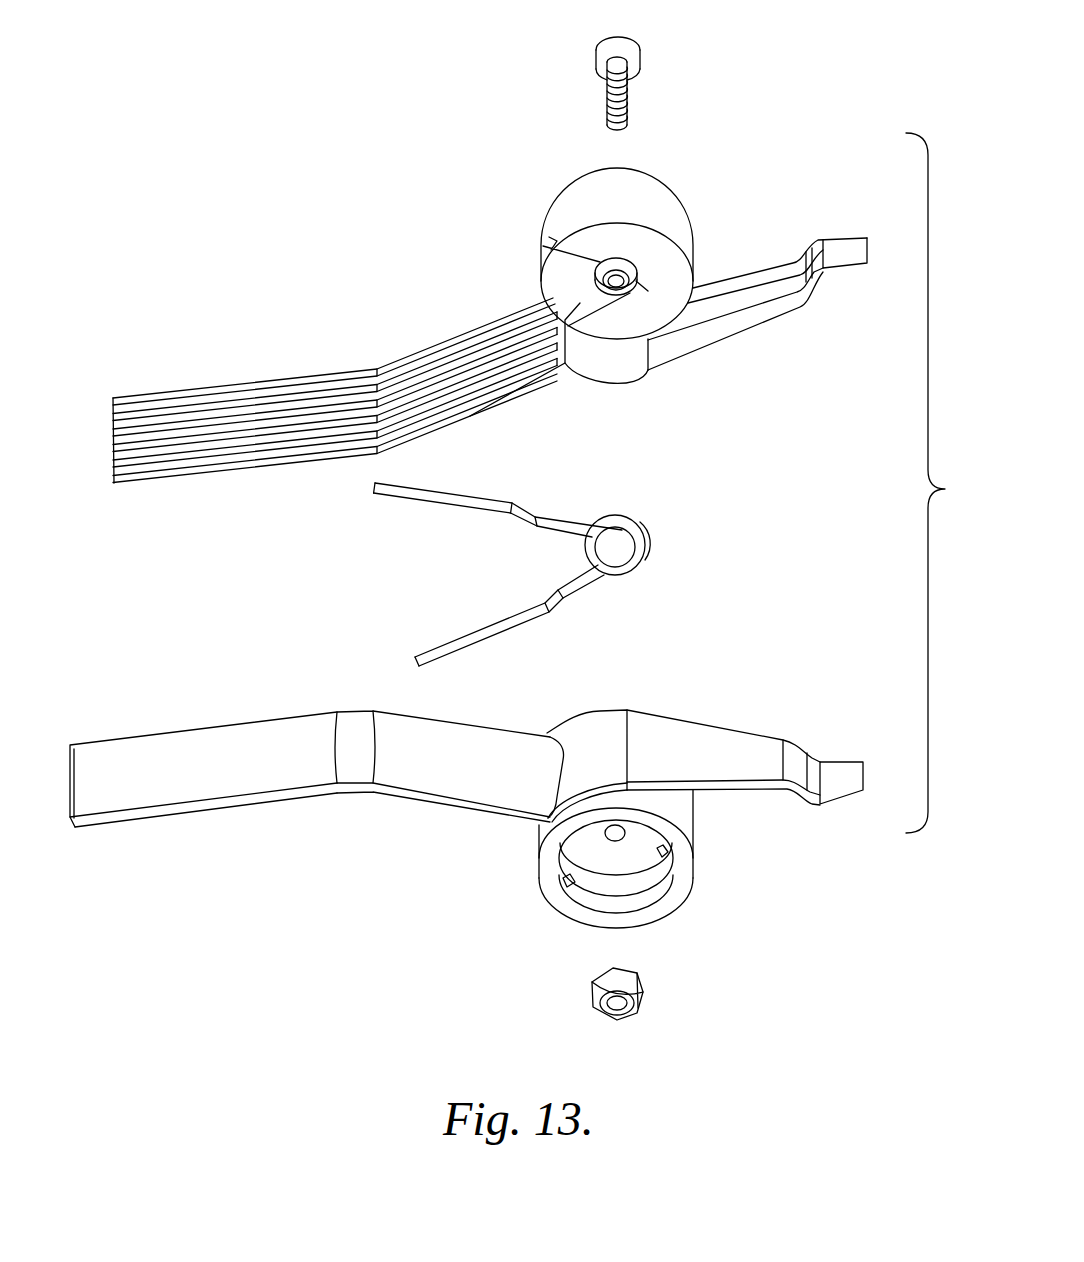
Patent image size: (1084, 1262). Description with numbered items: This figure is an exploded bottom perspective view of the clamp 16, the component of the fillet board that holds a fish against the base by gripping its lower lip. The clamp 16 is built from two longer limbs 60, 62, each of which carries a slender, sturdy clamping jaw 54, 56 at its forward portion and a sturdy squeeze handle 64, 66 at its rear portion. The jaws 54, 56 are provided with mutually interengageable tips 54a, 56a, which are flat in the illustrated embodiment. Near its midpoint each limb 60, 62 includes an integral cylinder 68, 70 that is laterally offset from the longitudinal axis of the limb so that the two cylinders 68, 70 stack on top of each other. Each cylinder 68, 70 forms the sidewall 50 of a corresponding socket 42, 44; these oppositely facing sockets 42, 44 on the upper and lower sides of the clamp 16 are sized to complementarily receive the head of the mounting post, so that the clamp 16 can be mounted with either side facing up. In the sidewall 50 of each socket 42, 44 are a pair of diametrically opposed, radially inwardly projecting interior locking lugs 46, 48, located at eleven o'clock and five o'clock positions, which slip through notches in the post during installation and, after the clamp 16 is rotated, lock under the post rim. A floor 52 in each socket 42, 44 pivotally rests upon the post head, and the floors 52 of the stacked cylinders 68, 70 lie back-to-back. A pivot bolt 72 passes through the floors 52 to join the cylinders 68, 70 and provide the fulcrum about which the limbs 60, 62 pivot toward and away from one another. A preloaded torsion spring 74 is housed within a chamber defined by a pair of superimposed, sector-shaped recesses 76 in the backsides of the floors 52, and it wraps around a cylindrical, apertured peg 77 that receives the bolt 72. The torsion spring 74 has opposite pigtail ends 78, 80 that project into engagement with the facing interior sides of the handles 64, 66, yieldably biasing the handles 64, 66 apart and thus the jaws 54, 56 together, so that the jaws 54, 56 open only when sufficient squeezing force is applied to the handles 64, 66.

The clamp 16 is at (450, 150).
The socket 42 is at (694, 255).
The socket 44 is at (594, 870).
The locking lug 46 is at (668, 860).
The locking lug 48 is at (578, 895).
The sidewall 50 is at (688, 885).
The floor 52 is at (672, 280).
The clamping jaw 54 is at (694, 298).
The tip 54a is at (850, 242).
The clamping jaw 56 is at (768, 742).
The tip 56a is at (840, 765).
The limb 60 is at (335, 384).
The limb 62 is at (490, 815).
The squeeze handle 64 is at (218, 392).
The squeeze handle 66 is at (150, 800).
The cylinder 68 is at (668, 190).
The cylinder 70 is at (690, 822).
The pivot bolt 72 is at (628, 46).
The torsion spring 74 is at (566, 564).
The sector-shaped recess 76 is at (556, 273).
The apertured peg 77 is at (612, 262).
The pigtail end 78 is at (485, 630).
The pigtail end 80 is at (478, 494).